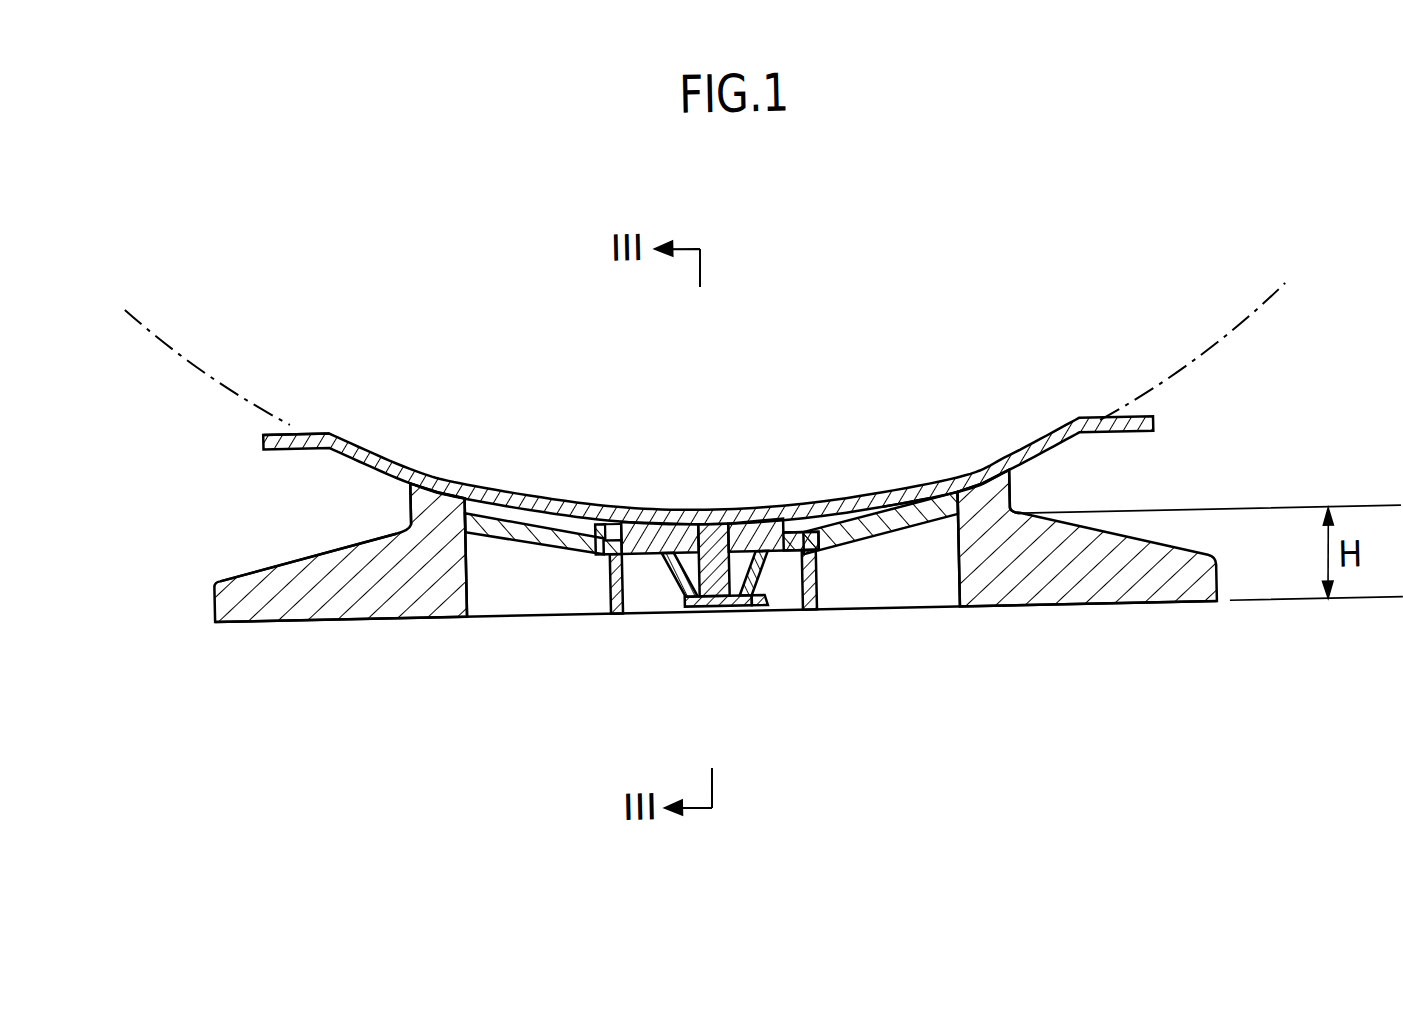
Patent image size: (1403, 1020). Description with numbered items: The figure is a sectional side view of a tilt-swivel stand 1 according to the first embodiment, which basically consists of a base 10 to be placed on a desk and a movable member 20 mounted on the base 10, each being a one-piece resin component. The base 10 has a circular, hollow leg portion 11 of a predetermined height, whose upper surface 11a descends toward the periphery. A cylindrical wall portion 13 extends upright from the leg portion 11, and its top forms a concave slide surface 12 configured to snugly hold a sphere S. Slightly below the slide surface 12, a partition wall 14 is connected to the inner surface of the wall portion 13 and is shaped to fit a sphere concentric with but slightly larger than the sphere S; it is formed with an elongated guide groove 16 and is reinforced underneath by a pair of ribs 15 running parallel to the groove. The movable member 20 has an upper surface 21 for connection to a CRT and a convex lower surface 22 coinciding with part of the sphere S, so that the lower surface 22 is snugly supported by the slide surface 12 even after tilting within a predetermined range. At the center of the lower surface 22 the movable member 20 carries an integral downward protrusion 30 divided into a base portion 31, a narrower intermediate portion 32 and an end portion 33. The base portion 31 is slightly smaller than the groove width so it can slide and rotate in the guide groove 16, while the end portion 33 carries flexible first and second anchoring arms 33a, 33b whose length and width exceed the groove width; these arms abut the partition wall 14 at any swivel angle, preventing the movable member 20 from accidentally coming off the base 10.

The tilt-swivel stand 1 is at (943, 390).
The base 10 is at (1165, 637).
The leg portion 11 is at (334, 596).
The upper surface 11a is at (324, 540).
The slide surface 12 is at (434, 484).
The wall portion 13 is at (1017, 484).
The partition wall 14 is at (518, 533).
The ribs 15 is at (606, 588).
The guide groove 16 is at (692, 524).
The movable member 20 is at (366, 440).
The upper surface 21 is at (341, 422).
The lower surface 22 is at (914, 519).
The protrusion 30 is at (714, 607).
The base portion 31 is at (735, 525).
The intermediate portion 32 is at (756, 597).
The end portion 33 is at (774, 663).
The first anchoring arm 33a is at (661, 579).
The second anchoring arm 33b is at (771, 581).
The sphere S is at (1238, 342).